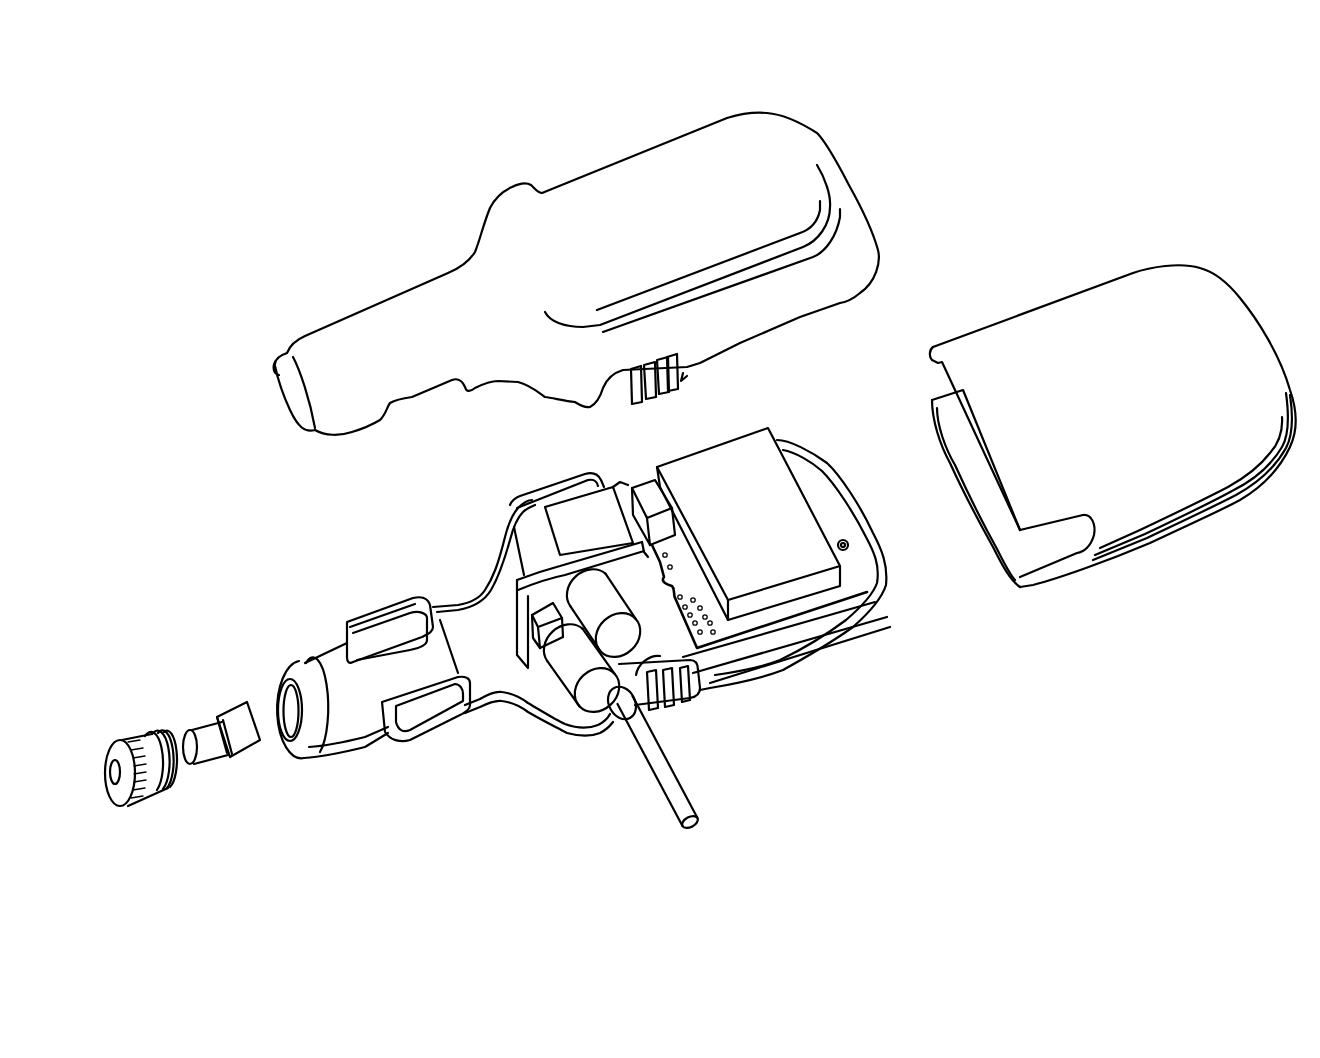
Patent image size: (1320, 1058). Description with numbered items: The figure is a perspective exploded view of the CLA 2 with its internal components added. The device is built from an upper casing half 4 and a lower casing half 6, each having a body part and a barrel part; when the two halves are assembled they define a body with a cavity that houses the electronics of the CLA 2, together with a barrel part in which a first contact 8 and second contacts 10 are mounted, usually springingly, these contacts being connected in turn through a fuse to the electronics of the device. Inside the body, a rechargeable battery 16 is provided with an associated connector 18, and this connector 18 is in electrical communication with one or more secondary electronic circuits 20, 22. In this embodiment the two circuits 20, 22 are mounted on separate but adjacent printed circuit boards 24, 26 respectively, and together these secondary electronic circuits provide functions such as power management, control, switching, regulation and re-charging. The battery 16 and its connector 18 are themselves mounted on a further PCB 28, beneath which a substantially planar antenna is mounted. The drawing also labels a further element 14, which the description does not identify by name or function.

The CLA 2 is at (288, 172).
The upper casing half 4 is at (628, 173).
The lower casing half 6 is at (792, 654).
The first contact 8 is at (247, 682).
The second contacts 10 is at (460, 677).
The end cover 14 is at (1138, 300).
The rechargeable battery 16 is at (797, 563).
The connector 18 is at (645, 488).
The secondary electronic circuit 20 is at (523, 516).
The secondary electronic circuit 22 is at (573, 659).
The printed circuit board 24 is at (525, 583).
The printed circuit board 26 is at (525, 665).
The PCB 28 is at (810, 467).